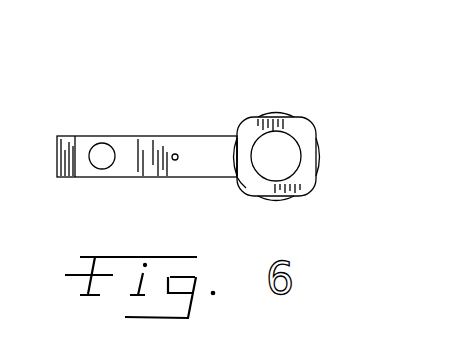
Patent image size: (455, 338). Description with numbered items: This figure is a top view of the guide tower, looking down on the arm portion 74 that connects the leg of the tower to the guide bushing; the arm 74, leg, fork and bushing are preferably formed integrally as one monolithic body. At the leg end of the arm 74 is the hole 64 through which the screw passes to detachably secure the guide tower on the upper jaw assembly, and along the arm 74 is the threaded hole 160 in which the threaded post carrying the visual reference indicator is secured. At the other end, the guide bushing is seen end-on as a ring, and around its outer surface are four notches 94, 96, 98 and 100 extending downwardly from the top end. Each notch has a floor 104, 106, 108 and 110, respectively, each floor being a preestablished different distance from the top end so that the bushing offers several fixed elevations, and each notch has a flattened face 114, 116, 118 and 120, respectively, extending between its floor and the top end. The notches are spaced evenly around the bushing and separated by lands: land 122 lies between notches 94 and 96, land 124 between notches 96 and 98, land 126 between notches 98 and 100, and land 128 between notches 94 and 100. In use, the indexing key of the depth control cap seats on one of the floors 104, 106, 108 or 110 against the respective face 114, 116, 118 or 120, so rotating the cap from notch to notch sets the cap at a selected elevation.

The hole 64 is at (101, 168).
The arm portion 74 is at (128, 147).
The notch 94 is at (288, 212).
The notch 96 is at (342, 157).
The notch 98 is at (300, 98).
The notch 100 is at (172, 137).
The floor 104 is at (293, 197).
The floor 106 is at (322, 146).
The floor 108 is at (262, 117).
The floor 110 is at (233, 155).
The flattened face 114 is at (267, 197).
The flattened face 116 is at (318, 166).
The flattened face 118 is at (275, 116).
The flattened face 120 is at (213, 149).
The land 122 is at (309, 189).
The land 124 is at (307, 128).
The land 126 is at (244, 118).
The land 128 is at (246, 184).
The threaded hole 160 is at (174, 154).